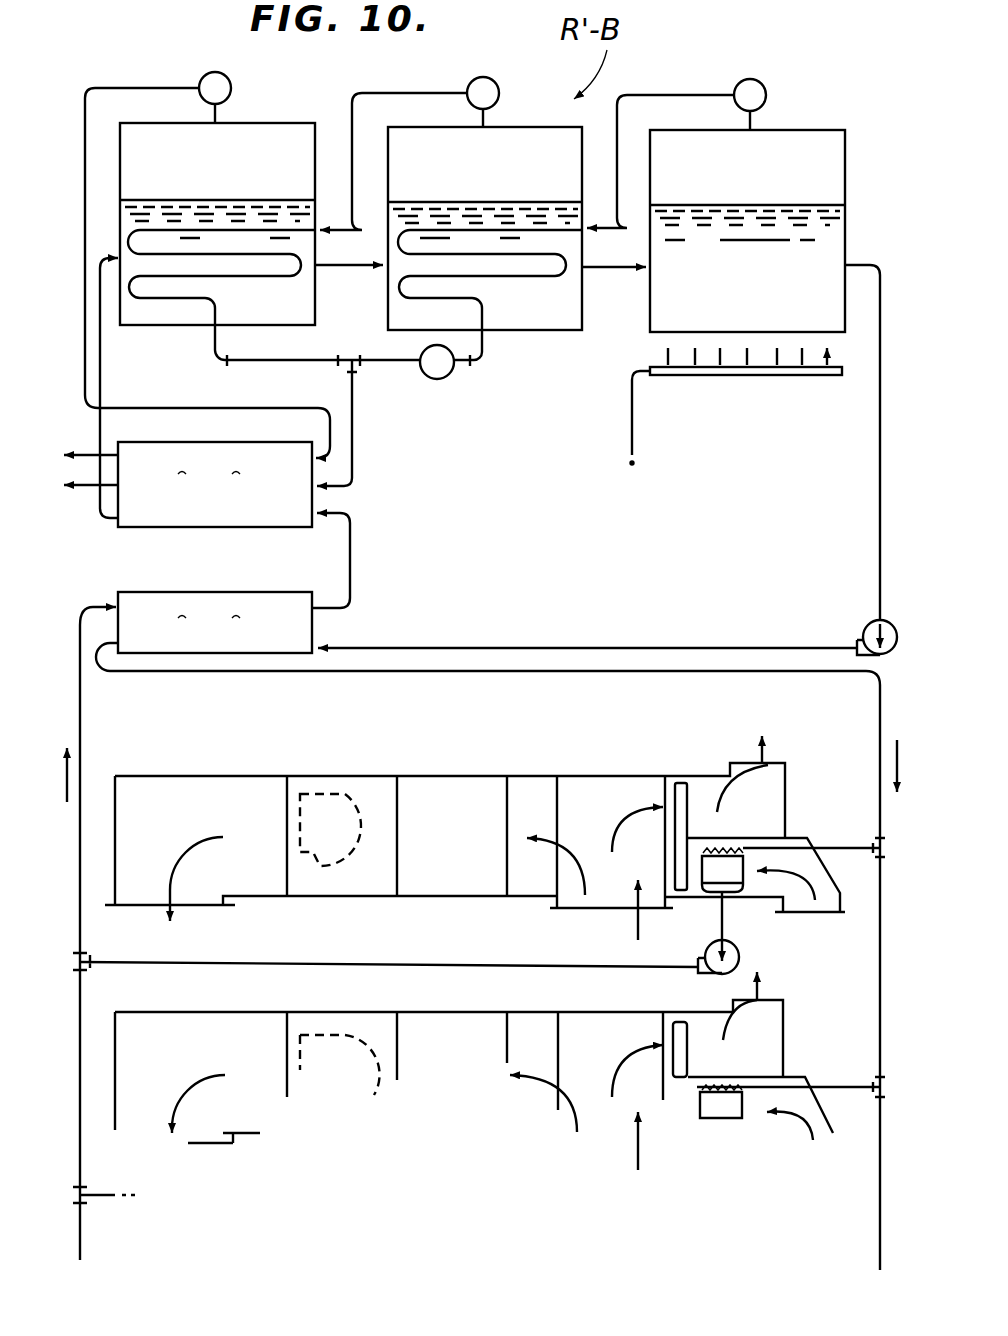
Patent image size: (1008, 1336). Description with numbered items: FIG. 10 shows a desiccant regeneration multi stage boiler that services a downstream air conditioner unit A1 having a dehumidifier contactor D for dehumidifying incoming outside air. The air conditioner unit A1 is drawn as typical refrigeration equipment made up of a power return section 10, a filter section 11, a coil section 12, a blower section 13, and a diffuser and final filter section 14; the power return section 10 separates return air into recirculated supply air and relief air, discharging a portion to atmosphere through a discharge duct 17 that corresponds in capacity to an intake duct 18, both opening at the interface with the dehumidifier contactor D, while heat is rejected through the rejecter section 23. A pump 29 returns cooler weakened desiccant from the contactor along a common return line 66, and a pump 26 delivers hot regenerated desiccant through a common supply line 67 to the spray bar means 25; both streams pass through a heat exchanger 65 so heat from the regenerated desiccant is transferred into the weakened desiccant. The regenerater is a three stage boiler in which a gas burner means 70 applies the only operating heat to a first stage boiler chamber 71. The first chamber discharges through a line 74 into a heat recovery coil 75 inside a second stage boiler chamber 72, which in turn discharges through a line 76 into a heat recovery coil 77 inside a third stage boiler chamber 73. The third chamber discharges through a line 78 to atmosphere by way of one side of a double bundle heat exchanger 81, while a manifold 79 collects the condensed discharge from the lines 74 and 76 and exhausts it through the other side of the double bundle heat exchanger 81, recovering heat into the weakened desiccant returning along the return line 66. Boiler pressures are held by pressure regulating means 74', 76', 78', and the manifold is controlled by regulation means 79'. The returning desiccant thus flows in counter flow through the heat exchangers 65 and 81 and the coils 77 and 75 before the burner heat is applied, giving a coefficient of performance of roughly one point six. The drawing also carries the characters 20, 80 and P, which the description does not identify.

The power return section 10 is at (610, 952).
The filter section 11 is at (536, 785).
The coil section 12 is at (450, 785).
The blower section 13 is at (347, 785).
The diffuser and final filter section 14 is at (268, 783).
The discharge duct 17 is at (765, 803).
The intake duct 18 is at (814, 862).
The exhaust vent 20 is at (775, 765).
The rejecter section 23 is at (673, 796).
The spray bar means 25 is at (717, 838).
The pump 26 is at (866, 623).
The pump 29 is at (740, 955).
The heat exchanger 65 is at (215, 622).
The return line 66 is at (103, 370).
The supply line 67 is at (514, 678).
The gas burner means 70 is at (730, 372).
The first stage boiler chamber 71 is at (805, 139).
The second stage boiler chamber 72 is at (535, 131).
The third stage boiler chamber 73 is at (297, 126).
The line 74 is at (660, 139).
The pressure regulating means 74' is at (757, 81).
The heat recovery coil 75 is at (515, 284).
The line 76 is at (393, 139).
The pressure regulating means 76' is at (491, 80).
The heat recovery coil 77 is at (258, 284).
The line 78 is at (205, 253).
The pressure regulating means 78' is at (229, 76).
The manifold 79 is at (348, 376).
The regulation means 79' is at (409, 423).
The outlet 80 is at (87, 492).
The double bundle heat exchanger 81 is at (215, 484).
The air conditioner unit A1 is at (236, 760).
The panel P is at (688, 775).
The dehumidifier contactor D is at (721, 984).